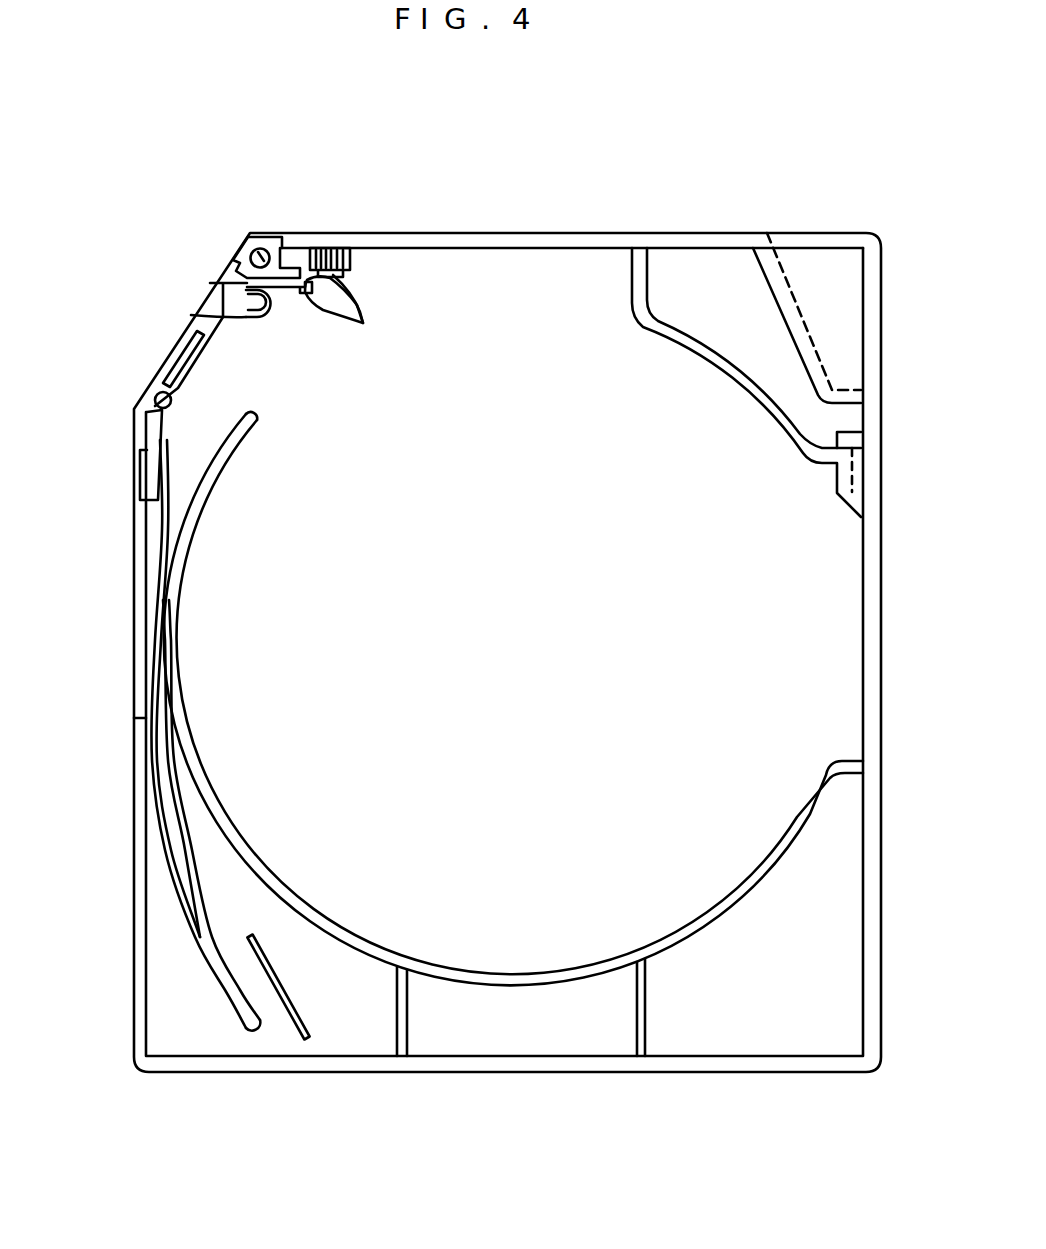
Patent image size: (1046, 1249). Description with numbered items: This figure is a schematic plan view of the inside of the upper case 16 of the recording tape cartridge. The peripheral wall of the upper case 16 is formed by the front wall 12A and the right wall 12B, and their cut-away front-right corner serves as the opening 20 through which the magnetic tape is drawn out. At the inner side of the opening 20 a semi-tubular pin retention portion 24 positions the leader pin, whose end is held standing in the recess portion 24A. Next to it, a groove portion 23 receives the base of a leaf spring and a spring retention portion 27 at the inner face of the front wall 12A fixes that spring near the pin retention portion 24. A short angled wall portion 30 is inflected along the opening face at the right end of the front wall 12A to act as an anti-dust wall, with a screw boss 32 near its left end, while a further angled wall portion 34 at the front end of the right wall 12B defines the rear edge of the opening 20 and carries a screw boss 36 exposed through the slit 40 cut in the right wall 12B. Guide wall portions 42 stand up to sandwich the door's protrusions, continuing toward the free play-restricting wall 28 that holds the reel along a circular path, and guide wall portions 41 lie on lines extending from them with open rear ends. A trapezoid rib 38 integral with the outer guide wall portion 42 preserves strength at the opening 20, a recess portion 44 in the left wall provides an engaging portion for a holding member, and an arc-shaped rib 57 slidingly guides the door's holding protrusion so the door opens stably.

The upper case 16 is at (622, 150).
The front wall 12A is at (522, 232).
The right wall 12B is at (133, 742).
The opening 20 is at (192, 298).
The groove portion 23 is at (300, 280).
The pin retention portion 24 is at (271, 316).
The recess portion 24A is at (252, 306).
The spring retention portion 27 is at (364, 324).
The free play-restricting wall 28 is at (727, 383).
The angled wall portion 30 is at (240, 262).
The screw boss 32 is at (261, 247).
The angled wall portion 34 is at (161, 468).
The screw boss 36 is at (154, 396).
The rib 38 is at (168, 347).
The slit 40 is at (142, 637).
The guide wall portion 41 is at (228, 278).
The guide wall portion 42 is at (200, 937).
The recess portion 44 is at (863, 468).
The rib 57 is at (293, 1008).